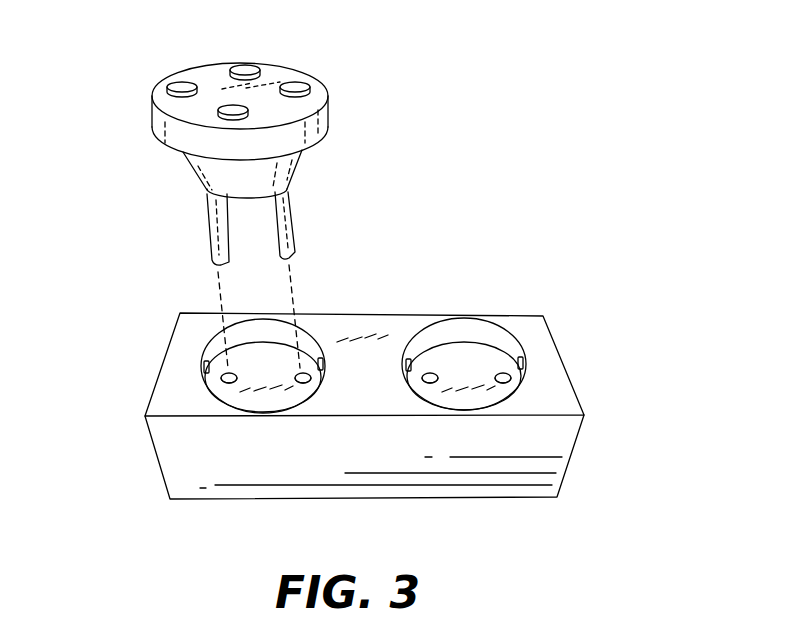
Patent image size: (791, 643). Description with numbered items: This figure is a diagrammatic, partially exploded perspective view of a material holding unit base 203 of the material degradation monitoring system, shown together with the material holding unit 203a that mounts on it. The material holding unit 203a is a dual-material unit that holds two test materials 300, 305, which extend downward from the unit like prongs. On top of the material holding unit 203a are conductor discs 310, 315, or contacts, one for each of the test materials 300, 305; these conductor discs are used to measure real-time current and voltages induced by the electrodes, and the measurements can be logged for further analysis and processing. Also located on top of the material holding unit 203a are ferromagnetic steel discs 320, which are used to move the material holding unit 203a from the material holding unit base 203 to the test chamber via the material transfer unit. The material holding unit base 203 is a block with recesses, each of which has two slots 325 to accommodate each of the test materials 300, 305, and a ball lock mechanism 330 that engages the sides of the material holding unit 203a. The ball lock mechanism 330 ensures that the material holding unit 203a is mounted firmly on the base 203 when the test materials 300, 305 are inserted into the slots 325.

The material holding unit base 203 is at (557, 387).
The material holding unit 203a is at (323, 113).
The test material 300 is at (207, 222).
The test material 305 is at (297, 217).
The conductor disc 310 is at (182, 85).
The conductor disc 315 is at (304, 84).
The ferromagnetic steel discs 320 is at (228, 109).
The slots 325 is at (206, 396).
The ball lock mechanism 330 is at (204, 363).